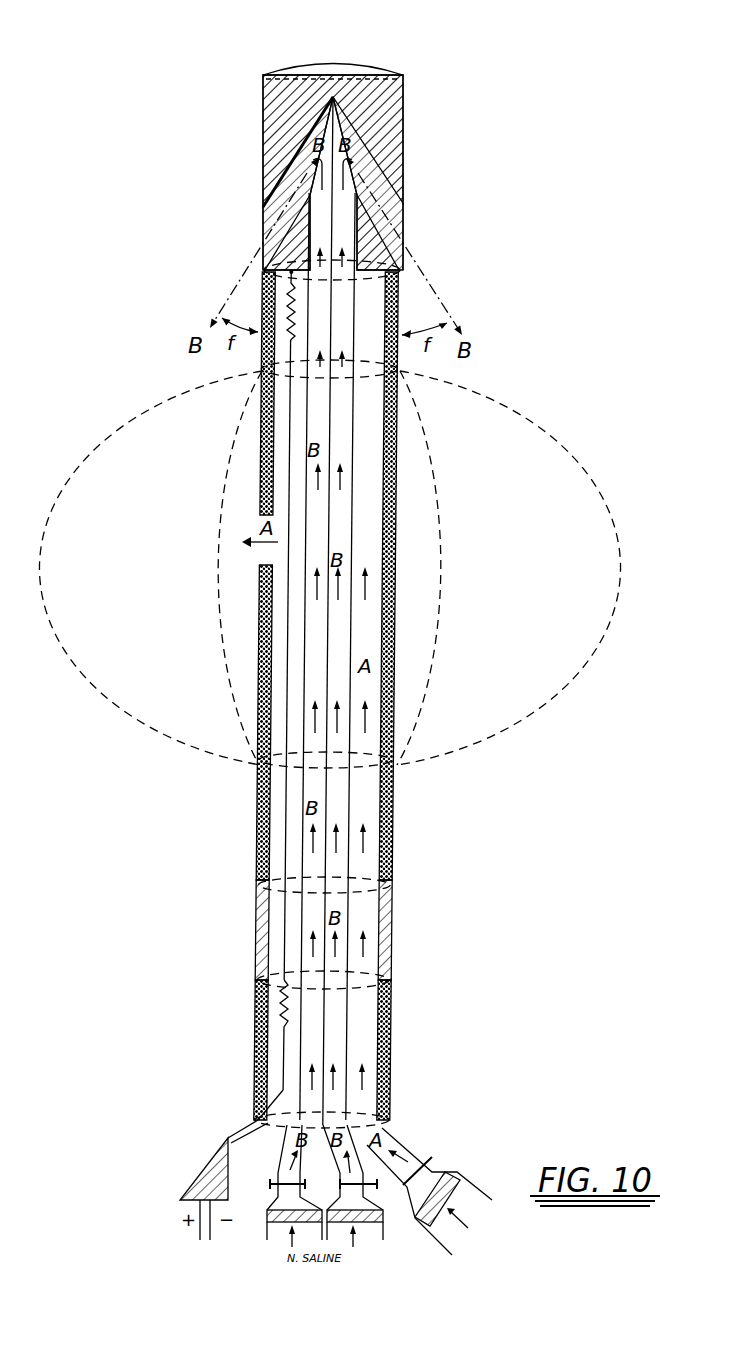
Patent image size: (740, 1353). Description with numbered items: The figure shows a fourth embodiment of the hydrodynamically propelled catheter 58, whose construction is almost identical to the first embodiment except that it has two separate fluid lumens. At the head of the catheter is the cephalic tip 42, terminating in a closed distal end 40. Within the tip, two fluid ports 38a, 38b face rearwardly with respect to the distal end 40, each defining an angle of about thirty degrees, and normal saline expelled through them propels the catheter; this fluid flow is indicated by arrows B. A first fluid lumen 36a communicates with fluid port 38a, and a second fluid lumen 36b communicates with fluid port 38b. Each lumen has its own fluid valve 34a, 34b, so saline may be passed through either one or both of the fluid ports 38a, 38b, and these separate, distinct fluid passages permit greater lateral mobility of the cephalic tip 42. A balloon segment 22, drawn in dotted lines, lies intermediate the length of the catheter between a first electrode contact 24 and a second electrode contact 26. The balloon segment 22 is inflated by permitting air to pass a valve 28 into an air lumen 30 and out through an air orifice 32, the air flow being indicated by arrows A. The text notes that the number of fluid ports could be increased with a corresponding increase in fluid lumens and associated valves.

The balloon segment 22 is at (221, 437).
The first electrode contact 24 is at (291, 272).
The second electrode contact 26 is at (284, 980).
The valve 28 is at (427, 1167).
The air lumen 30 is at (371, 802).
The air orifice 32 is at (258, 520).
The fluid valve 34a is at (270, 1188).
The fluid valve 34b is at (376, 1188).
The fluid lumen 36a is at (311, 642).
The fluid lumen 36b is at (343, 642).
The fluid port 38a is at (272, 212).
The fluid port 38b is at (402, 212).
The distal end 40 is at (295, 76).
The cephalic tip 42 is at (263, 148).
The fourth embodiment of the hydrodynamically propelled catheter 58 is at (255, 94).